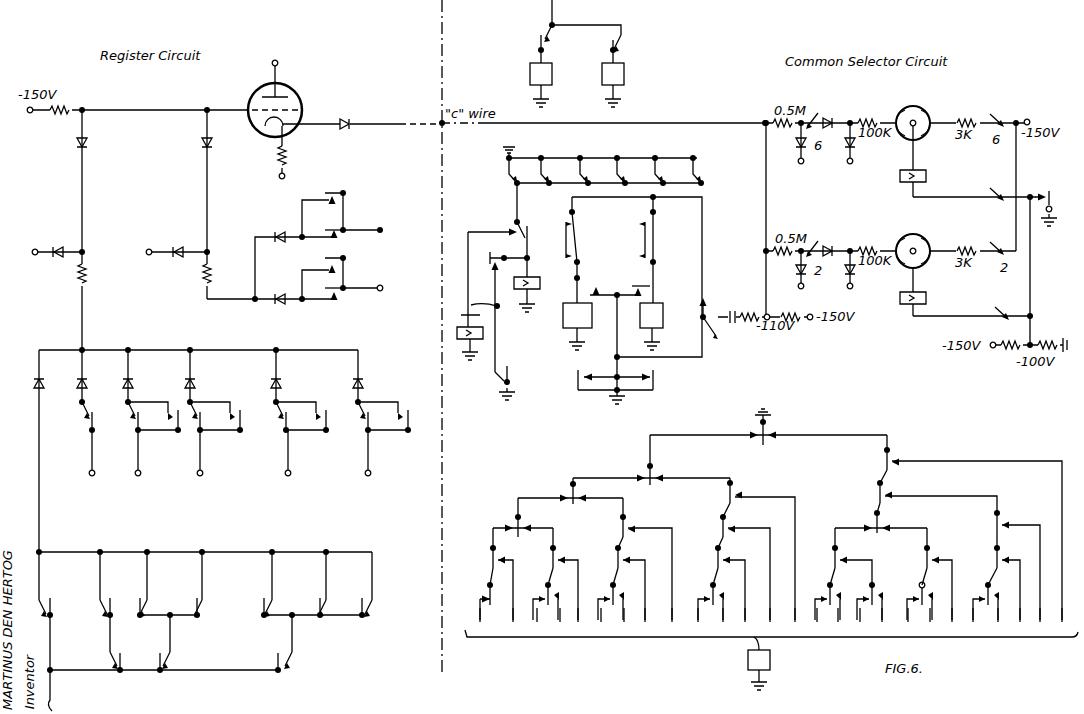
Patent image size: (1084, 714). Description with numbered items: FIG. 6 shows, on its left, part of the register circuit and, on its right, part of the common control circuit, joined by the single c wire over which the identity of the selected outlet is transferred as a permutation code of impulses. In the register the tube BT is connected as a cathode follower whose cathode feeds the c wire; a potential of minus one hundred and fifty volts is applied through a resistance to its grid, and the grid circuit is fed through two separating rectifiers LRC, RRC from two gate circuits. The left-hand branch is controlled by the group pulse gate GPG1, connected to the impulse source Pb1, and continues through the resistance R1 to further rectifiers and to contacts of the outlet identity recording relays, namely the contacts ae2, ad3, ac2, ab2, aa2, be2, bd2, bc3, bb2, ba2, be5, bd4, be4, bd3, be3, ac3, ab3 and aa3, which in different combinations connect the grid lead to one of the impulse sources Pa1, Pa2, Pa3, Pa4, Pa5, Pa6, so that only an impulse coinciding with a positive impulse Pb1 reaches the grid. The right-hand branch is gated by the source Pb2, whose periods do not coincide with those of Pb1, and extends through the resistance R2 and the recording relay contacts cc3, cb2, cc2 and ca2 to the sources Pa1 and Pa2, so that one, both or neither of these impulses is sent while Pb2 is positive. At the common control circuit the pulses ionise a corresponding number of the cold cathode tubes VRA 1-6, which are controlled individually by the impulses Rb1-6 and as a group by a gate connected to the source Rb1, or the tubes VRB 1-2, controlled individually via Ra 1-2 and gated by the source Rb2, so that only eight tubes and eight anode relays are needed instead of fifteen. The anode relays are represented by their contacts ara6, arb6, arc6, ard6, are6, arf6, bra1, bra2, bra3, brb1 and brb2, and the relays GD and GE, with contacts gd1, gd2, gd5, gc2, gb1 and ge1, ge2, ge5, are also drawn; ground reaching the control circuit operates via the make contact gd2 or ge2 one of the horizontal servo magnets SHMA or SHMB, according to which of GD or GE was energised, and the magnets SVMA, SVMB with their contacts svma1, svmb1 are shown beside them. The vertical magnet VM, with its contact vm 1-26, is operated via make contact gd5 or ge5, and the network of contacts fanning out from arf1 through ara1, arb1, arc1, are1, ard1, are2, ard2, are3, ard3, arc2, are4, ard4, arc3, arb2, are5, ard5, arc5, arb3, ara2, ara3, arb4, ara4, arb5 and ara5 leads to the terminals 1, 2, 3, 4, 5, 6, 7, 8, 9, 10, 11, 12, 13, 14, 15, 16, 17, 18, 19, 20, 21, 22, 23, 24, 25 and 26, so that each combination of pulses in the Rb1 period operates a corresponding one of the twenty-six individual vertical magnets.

The thermionic valve tube BT is at (345, 126).
The left rectifier LRC is at (99, 181).
The right rectifier RRC is at (186, 181).
The rectifier GPG1 is at (56, 243).
The terminal Pb1 is at (38, 262).
The resistor R1 is at (95, 301).
The terminal Pb2 is at (174, 261).
The resistor R2 is at (217, 275).
The relay contact cc3 is at (332, 202).
The relay contact cb2 is at (327, 223).
The relay contact cc2 is at (348, 270).
The relay contact ca2 is at (346, 298).
The terminal Pa2 is at (344, 360).
The terminal Pa1 is at (377, 389).
The relay contact ae2 is at (94, 416).
The terminal Pa5 is at (90, 463).
The relay contact ad3 is at (151, 408).
The relay contact be2 is at (174, 432).
The terminal Pa4 is at (140, 463).
The relay contact ac2 is at (213, 408).
The relay contact bd2 is at (236, 432).
The terminal Pa3 is at (202, 463).
The relay contact ab2 is at (299, 408).
The relay contact bc3 is at (311, 531).
The relay contact aa2 is at (381, 408).
The relay contact bb2 is at (412, 432).
The relay contact ba2 is at (55, 626).
The relay contact be5 is at (114, 615).
The relay contact ac3 is at (124, 654).
The relay contact bd4 is at (167, 615).
The relay contact be4 is at (212, 612).
The relay contact ab3 is at (178, 661).
The relay contact bd3 is at (317, 618).
The relay contact be3 is at (378, 615).
The relay contact aa3 is at (297, 663).
The terminal Pa6 is at (67, 692).
The relay contact gd2 is at (559, 44).
The relay SHMA is at (514, 85).
The relay contact ge2 is at (630, 49).
The relay SHMB is at (636, 85).
The relay contact ara6 is at (489, 166).
The relay contact arb6 is at (535, 159).
The relay contact arc6 is at (580, 163).
The relay contact ard6 is at (631, 158).
The relay contact are6 is at (672, 163).
The relay contact arf6 is at (711, 169).
The relay contact bra1 is at (497, 237).
The relay contact gd1 is at (503, 308).
The relay GD is at (533, 283).
The relay contact ge1 is at (468, 309).
The relay GE is at (457, 334).
The relay contact gc2 is at (515, 382).
The relay contact brb1 is at (587, 229).
The relay contact bra2 is at (596, 268).
The relay contact svma1 is at (608, 289).
The relay contact brb2 is at (664, 229).
The relay contact bra3 is at (669, 279).
The relay contact svmb1 is at (664, 292).
The relay SVMA is at (563, 331).
The relay SVMB is at (663, 328).
The relay contact gd5 is at (595, 384).
The relay contact ge5 is at (669, 384).
The selector wiper vm 1-26 is at (735, 311).
The rectifier Rb1 is at (804, 153).
The rectifier Rb1-6 is at (855, 153).
The voltage reference tube VRA 1-6 is at (918, 116).
The relay contact gb1 is at (1039, 199).
The rectifier Rb2 is at (801, 279).
The rectifier Ra 1-2 is at (863, 282).
The voltage reference tube VRB 1-2 is at (928, 244).
The relay contact arf1 is at (768, 427).
The relay contact ara1 is at (651, 460).
The relay contact arb1 is at (570, 491).
The relay contact arc1 is at (511, 517).
The relay contact are1 is at (482, 574).
The relay contact ard1 is at (471, 594).
The relay contact are2 is at (569, 574).
The relay contact ard2 is at (531, 594).
The relay contact are3 is at (646, 559).
The relay contact ard3 is at (634, 578).
The relay contact arc2 is at (623, 594).
The relay contact are4 is at (761, 549).
The relay contact ard4 is at (745, 561).
The relay contact arc3 is at (739, 578).
The relay contact arb2 is at (724, 594).
The relay contact are5 is at (944, 527).
The relay contact ard5 is at (909, 491).
The relay contact arc5 is at (929, 561).
The relay contact arb3 is at (833, 556).
The relay contact ara2 is at (811, 594).
The relay contact ara3 is at (871, 601).
The relay contact arb4 is at (943, 574).
The relay contact ara4 is at (918, 594).
The relay contact arb5 is at (1011, 576).
The relay contact ara5 is at (997, 594).
The selector magnet VM is at (748, 663).
The selector terminal 1 is at (841, 622).
The selector terminal 2 is at (861, 622).
The selector terminal 3 is at (906, 622).
The selector terminal 4 is at (974, 622).
The selector terminal 5 is at (1065, 622).
The selector terminal 6 is at (698, 622).
The selector terminal 7 is at (722, 622).
The selector terminal 8 is at (745, 622).
The selector terminal 9 is at (770, 622).
The selector terminal 10 is at (797, 622).
The selector terminal 11 is at (883, 622).
The selector terminal 12 is at (603, 622).
The selector terminal 13 is at (625, 622).
The selector terminal 14 is at (645, 622).
The selector terminal 15 is at (672, 622).
The selector terminal 16 is at (930, 622).
The selector terminal 17 is at (952, 622).
The selector terminal 18 is at (538, 622).
The selector terminal 19 is at (561, 622).
The selector terminal 20 is at (583, 622).
The selector terminal 21 is at (998, 622).
The selector terminal 22 is at (1023, 622).
The selector terminal 23 is at (1045, 622).
The selector terminal 24 is at (480, 622).
The selector terminal 25 is at (513, 622).
The selector terminal 26 is at (820, 622).